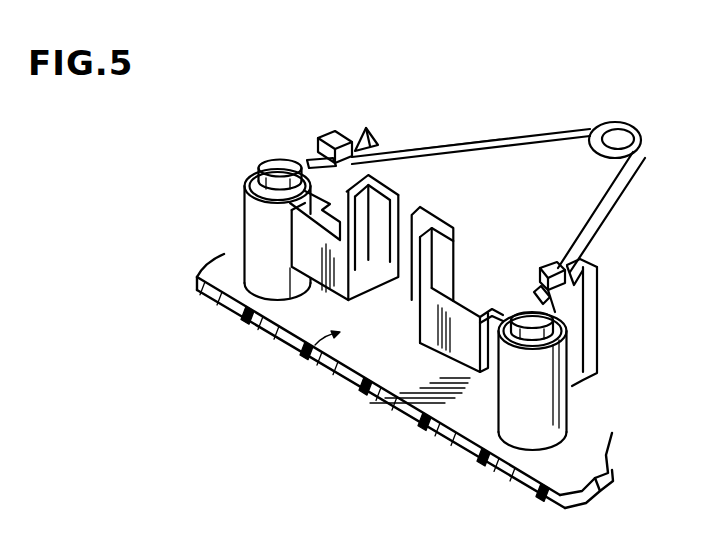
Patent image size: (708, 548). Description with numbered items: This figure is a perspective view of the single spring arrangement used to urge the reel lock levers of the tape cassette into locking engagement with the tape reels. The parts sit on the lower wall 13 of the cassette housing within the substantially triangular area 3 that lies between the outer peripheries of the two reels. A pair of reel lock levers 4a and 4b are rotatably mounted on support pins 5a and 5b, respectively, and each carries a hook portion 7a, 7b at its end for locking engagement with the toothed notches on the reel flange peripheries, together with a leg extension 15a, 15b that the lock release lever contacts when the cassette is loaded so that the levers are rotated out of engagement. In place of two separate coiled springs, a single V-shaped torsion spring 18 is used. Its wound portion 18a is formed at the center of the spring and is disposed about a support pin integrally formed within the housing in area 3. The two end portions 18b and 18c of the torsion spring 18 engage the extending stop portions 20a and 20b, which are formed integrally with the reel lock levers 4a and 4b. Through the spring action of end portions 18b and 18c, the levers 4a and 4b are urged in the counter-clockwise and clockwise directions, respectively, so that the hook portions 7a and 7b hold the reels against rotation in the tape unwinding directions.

The substantially triangular area 3 is at (300, 350).
The lower wall 13 is at (347, 353).
The reel lock lever 4a is at (356, 152).
The reel lock lever 4b is at (575, 341).
The support pin 5a is at (272, 164).
The support pin 5b is at (542, 325).
The hook portion 7a is at (358, 148).
The hook portion 7b is at (580, 262).
The leg extension 15a is at (377, 246).
The leg extension 15b is at (436, 216).
The V-shaped torsion spring 18 is at (512, 132).
The wound portion 18a is at (614, 121).
The end portion 18b is at (450, 150).
The end portion 18c is at (600, 205).
The extending stop portion 20a is at (332, 134).
The extending stop portion 20b is at (540, 267).